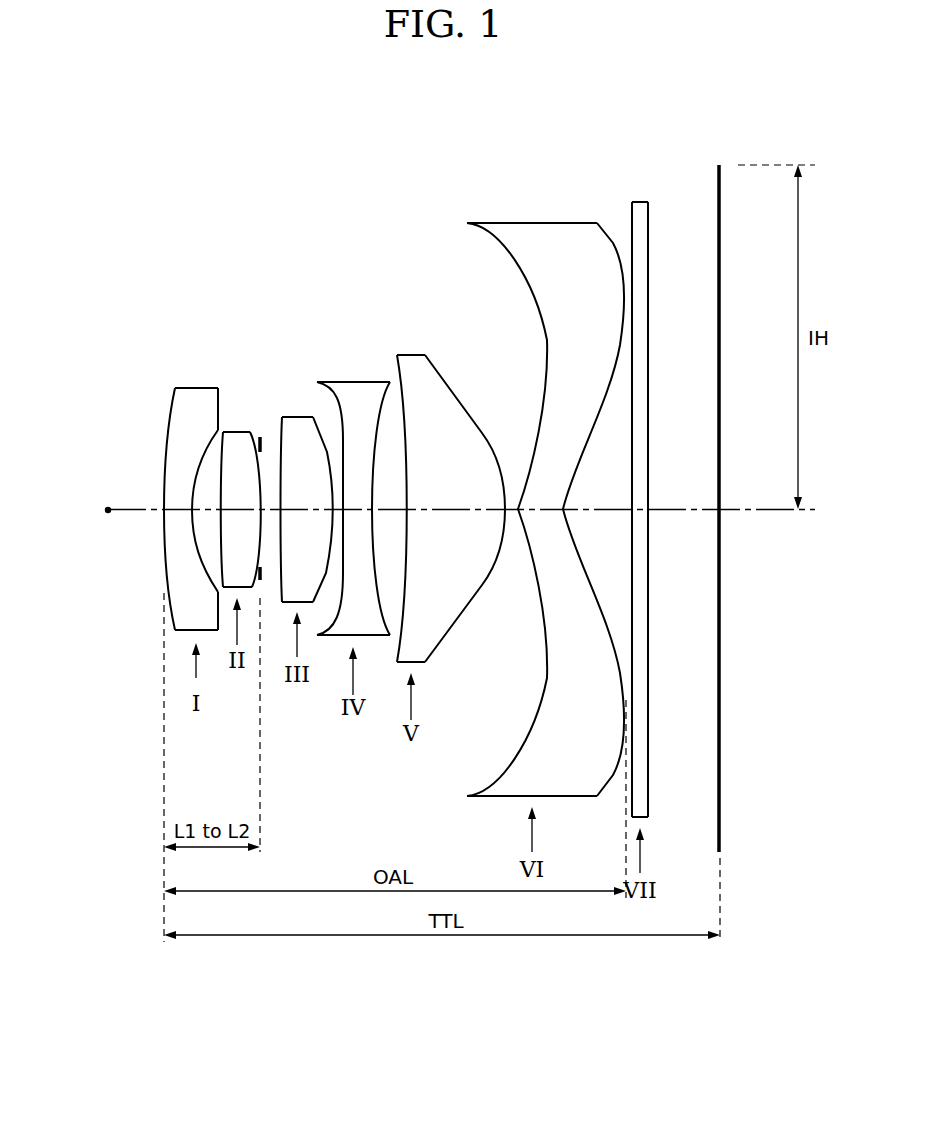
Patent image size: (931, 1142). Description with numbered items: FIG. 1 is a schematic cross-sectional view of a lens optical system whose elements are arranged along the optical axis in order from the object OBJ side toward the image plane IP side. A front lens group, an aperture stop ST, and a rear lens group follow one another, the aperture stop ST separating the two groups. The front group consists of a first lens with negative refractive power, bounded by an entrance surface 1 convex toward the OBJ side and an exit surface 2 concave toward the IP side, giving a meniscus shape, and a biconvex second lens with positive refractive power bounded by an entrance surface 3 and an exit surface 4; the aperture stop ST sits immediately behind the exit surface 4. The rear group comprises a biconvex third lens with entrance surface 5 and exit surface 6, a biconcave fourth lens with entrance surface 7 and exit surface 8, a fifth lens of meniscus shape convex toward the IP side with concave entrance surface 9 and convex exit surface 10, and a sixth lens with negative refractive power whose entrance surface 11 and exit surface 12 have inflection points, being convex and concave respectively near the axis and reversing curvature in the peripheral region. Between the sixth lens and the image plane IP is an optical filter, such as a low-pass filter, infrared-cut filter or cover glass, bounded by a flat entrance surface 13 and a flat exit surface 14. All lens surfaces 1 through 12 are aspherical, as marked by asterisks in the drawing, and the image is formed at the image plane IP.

The entrance surface of first lens 1 is at (167, 445).
The exit surface of first lens 2 is at (200, 458).
The entrance surface of second lens 3 is at (220, 467).
The exit surface of second lens 4 is at (258, 467).
The entrance surface of third lens 5 is at (287, 467).
The exit surface of third lens 6 is at (330, 467).
The entrance surface of fourth lens 7 is at (345, 437).
The exit surface of fourth lens 8 is at (375, 437).
The entrance surface of fifth lens 9 is at (403, 433).
The exit surface of fifth lens 10 is at (482, 433).
The entrance surface of sixth lens 11 is at (547, 340).
The exit surface of sixth lens 12 is at (621, 340).
The entrance surface of optical filter 13 is at (632, 247).
The exit surface of optical filter 14 is at (648, 247).
The aperture stop ST is at (258, 573).
The image plane IP is at (718, 236).
The object OBJ is at (434, 510).